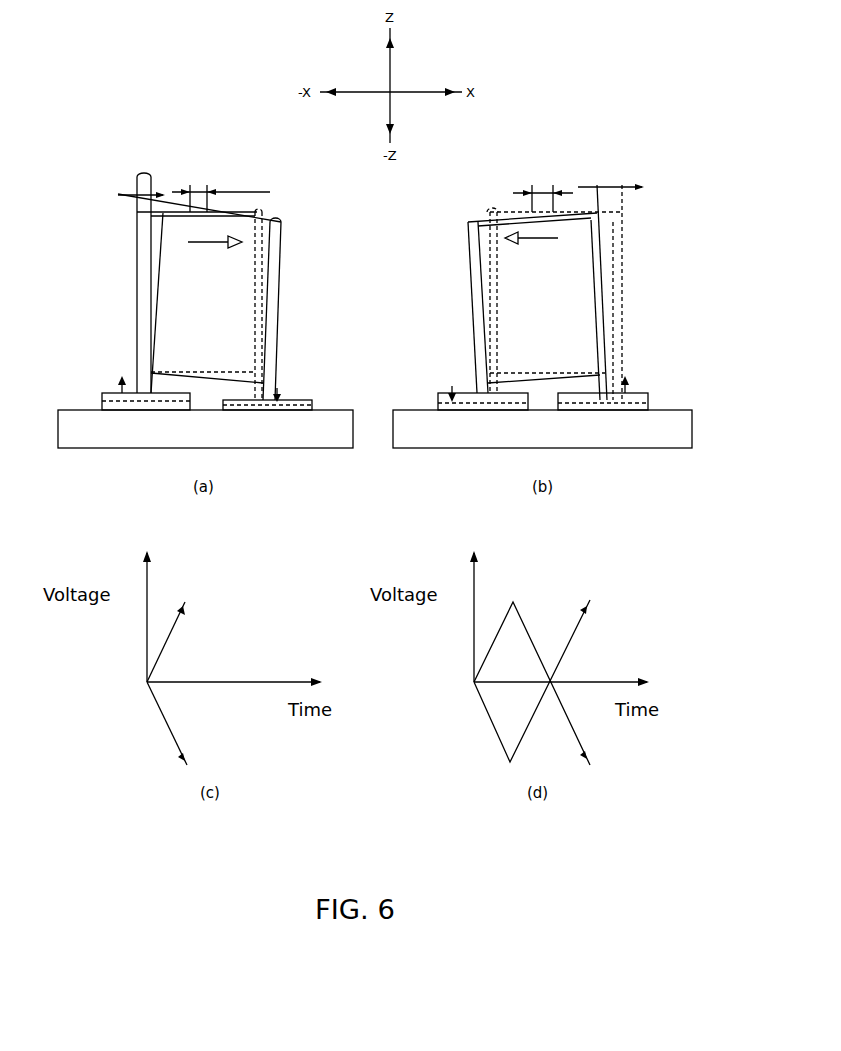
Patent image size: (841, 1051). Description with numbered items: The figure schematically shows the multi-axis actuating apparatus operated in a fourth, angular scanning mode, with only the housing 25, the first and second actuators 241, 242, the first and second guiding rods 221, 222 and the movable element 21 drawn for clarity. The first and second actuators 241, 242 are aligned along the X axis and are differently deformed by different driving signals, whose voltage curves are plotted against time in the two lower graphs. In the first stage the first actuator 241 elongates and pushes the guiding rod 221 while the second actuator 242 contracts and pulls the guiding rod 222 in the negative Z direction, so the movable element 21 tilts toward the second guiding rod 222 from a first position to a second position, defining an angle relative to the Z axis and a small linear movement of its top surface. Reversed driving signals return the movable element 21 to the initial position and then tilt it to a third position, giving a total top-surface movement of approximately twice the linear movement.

The movable element 21 is at (255, 262).
The first guiding rod 221 is at (137, 243).
The second guiding rod 222 is at (280, 305).
The first actuator 241 is at (102, 404).
The second actuator 242 is at (285, 400).
The housing 25 is at (312, 437).